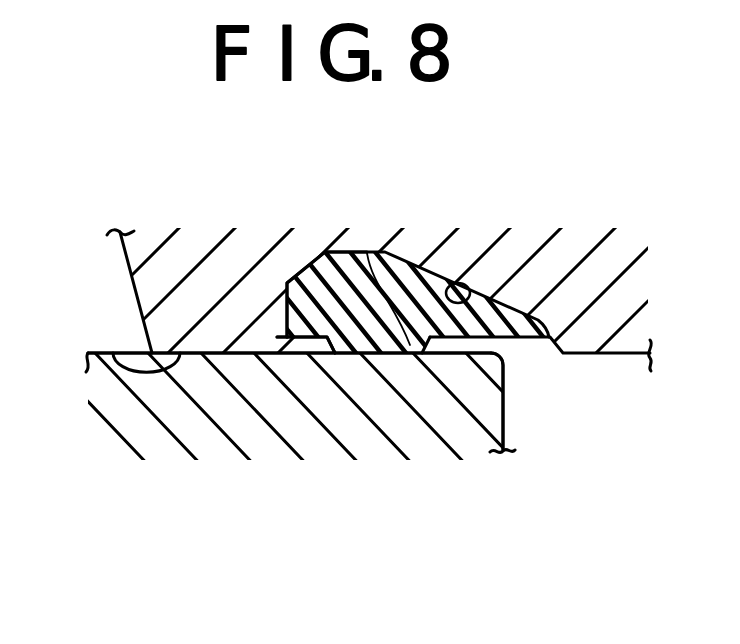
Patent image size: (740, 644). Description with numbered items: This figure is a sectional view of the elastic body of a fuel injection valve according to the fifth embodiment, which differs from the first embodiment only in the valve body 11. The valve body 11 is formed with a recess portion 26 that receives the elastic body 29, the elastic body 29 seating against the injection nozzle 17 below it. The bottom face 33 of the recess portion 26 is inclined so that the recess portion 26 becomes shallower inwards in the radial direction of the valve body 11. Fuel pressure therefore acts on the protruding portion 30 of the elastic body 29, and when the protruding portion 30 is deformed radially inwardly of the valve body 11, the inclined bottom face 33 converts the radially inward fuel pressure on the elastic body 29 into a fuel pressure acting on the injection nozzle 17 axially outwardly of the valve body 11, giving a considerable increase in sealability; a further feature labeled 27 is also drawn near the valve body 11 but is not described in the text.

The valve body 11 is at (233, 263).
The injection nozzle 17 is at (155, 402).
The recess portion 26 is at (503, 398).
The recess 27 is at (113, 353).
The elastic body 29 is at (317, 310).
The protruding portion 30 is at (400, 330).
The bottom face 33 is at (470, 297).